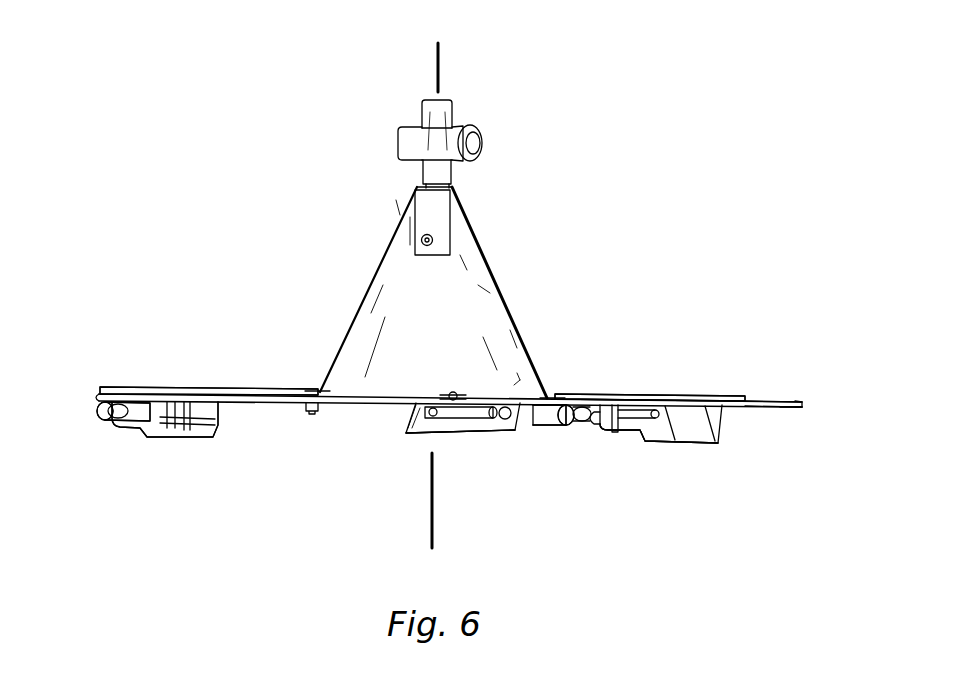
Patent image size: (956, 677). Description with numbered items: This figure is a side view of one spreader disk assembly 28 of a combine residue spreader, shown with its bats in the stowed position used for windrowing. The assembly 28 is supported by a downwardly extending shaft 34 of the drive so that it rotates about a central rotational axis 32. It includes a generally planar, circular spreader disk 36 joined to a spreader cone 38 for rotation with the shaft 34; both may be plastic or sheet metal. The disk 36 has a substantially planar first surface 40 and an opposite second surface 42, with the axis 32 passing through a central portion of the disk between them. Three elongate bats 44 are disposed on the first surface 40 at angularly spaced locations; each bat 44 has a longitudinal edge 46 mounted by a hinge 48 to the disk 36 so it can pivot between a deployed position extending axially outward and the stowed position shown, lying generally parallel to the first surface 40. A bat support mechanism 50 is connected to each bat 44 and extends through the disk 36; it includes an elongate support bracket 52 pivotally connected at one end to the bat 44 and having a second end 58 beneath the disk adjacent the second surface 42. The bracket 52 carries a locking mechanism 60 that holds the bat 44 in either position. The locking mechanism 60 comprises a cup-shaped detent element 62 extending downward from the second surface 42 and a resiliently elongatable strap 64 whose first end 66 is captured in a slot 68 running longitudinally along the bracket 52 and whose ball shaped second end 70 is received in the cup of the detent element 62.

The spreader disk assembly 28 is at (804, 400).
The central rotational axis 32 is at (439, 66).
The shaft 34 is at (455, 110).
The spreader disk 36 is at (788, 408).
The spreader cone 38 is at (473, 222).
The first surface 40 is at (776, 399).
The second surface 42 is at (283, 404).
The elongate bat 44 is at (240, 393).
The longitudinal edge 46 is at (586, 394).
The hinge 48 is at (586, 394).
The bat support mechanism 50 is at (150, 437).
The support bracket 52 is at (150, 437).
The second end 58 is at (412, 436).
The locking mechanism 60 is at (135, 425).
The detent element 62 is at (135, 425).
The resiliently elongatable strap 64 is at (522, 416).
The first end 66 is at (483, 403).
The slot 68 is at (193, 437).
The ball shaped second end 70 is at (118, 406).